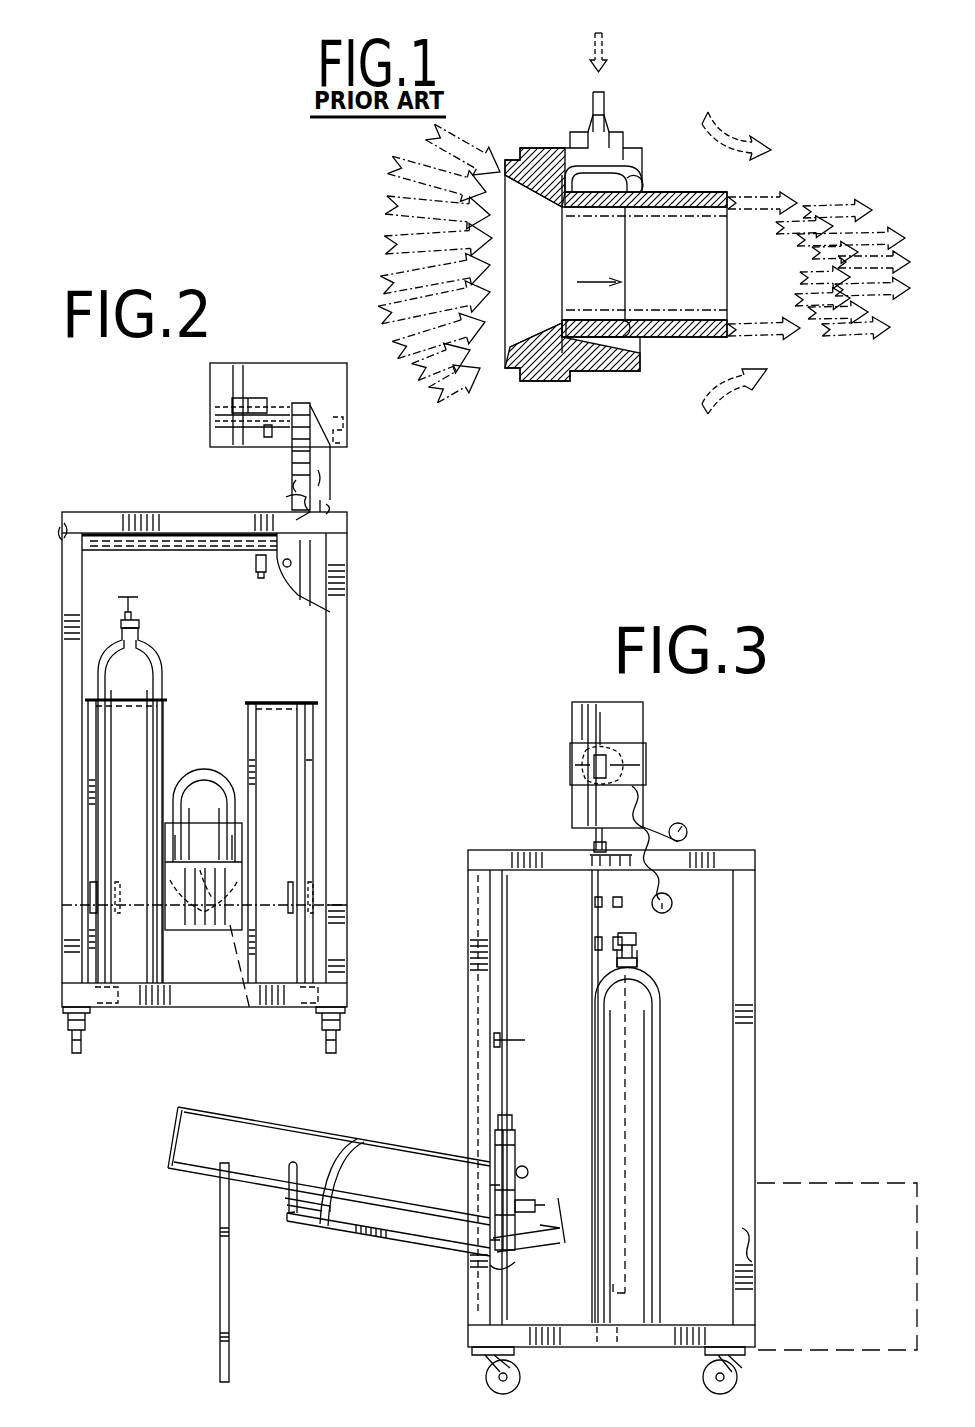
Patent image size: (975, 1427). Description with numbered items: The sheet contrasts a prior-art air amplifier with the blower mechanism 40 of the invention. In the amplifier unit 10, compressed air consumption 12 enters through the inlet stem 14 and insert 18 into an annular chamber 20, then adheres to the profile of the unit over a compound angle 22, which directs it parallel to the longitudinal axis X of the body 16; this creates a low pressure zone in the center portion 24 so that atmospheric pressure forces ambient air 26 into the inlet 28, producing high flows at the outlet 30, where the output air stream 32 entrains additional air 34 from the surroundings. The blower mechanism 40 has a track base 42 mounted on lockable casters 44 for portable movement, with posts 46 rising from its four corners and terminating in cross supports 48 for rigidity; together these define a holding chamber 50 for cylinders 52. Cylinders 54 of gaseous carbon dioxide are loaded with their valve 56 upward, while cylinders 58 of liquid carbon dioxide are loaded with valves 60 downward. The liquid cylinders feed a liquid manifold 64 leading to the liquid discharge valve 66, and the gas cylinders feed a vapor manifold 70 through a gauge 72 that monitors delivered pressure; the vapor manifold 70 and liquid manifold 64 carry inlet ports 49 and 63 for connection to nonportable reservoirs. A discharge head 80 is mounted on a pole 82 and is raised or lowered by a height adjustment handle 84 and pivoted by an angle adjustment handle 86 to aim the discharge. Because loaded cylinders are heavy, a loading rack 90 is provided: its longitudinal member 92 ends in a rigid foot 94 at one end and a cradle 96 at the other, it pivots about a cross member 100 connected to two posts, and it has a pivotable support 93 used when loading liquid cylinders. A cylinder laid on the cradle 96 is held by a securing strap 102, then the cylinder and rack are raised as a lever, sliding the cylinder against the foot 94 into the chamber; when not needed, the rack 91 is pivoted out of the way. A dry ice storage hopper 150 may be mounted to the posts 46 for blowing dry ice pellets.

In FIG. 1, the prior art nozzle assembly 10 is at (812, 447).
In FIG. 1, the compressed air consumption 12 is at (602, 36).
In FIG. 1, the inlet stem 14 is at (604, 102).
In FIG. 1, the body 16 is at (563, 381).
In FIG. 1, the nozzle insert 18 is at (633, 160).
In FIG. 1, the annular chamber 20 is at (594, 183).
In FIG. 1, the compound angle 22 is at (575, 212).
In FIG. 1, the center portion 24 is at (695, 278).
In FIG. 1, the ambient air 26 is at (425, 263).
In FIG. 1, the inlet 28 is at (512, 327).
In FIG. 1, the outlet 30 is at (720, 310).
In FIG. 1, the output air stream 32 is at (834, 266).
In FIG. 1, the additional air 34 is at (732, 266).
In FIG. 2, the blower mechanism 40 is at (54, 983).
In FIG. 3, the blower mechanism 40 is at (344, 1370).
In FIG. 2, the track base 42 is at (133, 995).
In FIG. 3, the track base 42 is at (572, 1333).
In FIG. 2, the casters 44 is at (66, 1035).
In FIG. 3, the casters 44 is at (486, 1376).
In FIG. 2, the posts 46 is at (62, 775).
In FIG. 3, the posts 46 is at (468, 1020).
In FIG. 2, the cross supports 48 is at (112, 528).
In FIG. 3, the cross supports 48 is at (511, 856).
In FIG. 2, the inlet port 49 is at (60, 523).
In FIG. 2, the holding chamber 50 is at (232, 670).
In FIG. 3, the holding chamber 50 is at (559, 927).
In FIG. 2, the cylinders 52 is at (115, 824).
In FIG. 3, the cylinders 52 is at (630, 1175).
In FIG. 2, the cylinders containing gaseous carbon dioxide 54 is at (118, 682).
In FIG. 3, the cylinders containing gaseous carbon dioxide 54 is at (634, 1080).
In FIG. 2, the valve 56 is at (140, 597).
In FIG. 3, the valve 56 is at (640, 942).
In FIG. 2, the cylinders containing liquid carbon dioxide 58 is at (217, 782).
In FIG. 3, the cylinders containing liquid carbon dioxide 58 is at (262, 1142).
In FIG. 3, the valves 60 is at (540, 1205).
In FIG. 2, the inlet port 63 is at (348, 922).
In FIG. 2, the liquid manifold 64 is at (348, 885).
In FIG. 3, the liquid manifold 64 is at (503, 1138).
In FIG. 2, the liquid discharge valve 66 is at (267, 438).
In FIG. 2, the vapor manifold 70 is at (213, 552).
In FIG. 2, the gauge 72 is at (263, 578).
In FIG. 3, the gauge 72 is at (596, 846).
In FIG. 2, the discharge head 80 is at (294, 428).
In FIG. 3, the discharge head 80 is at (630, 722).
In FIG. 2, the pole 82 is at (336, 490).
In FIG. 2, the height adjustment handle 84 is at (348, 580).
In FIG. 2, the angle adjustment handle 86 is at (326, 513).
In FIG. 3, the loading rack 90 is at (324, 1222).
In FIG. 2, the rack 91 is at (280, 700).
In FIG. 3, the rack 91 is at (494, 1042).
In FIG. 3, the longitudinal member 92 is at (368, 1238).
In FIG. 3, the pivotable support 93 is at (222, 1296).
In FIG. 3, the rigid foot 94 is at (565, 1232).
In FIG. 3, the cradle 96 is at (290, 1195).
In FIG. 2, the cross member 100 is at (246, 985).
In FIG. 3, the securing strap 102 is at (357, 1140).
In FIG. 3, the dry ice storage hopper 150 is at (831, 1182).